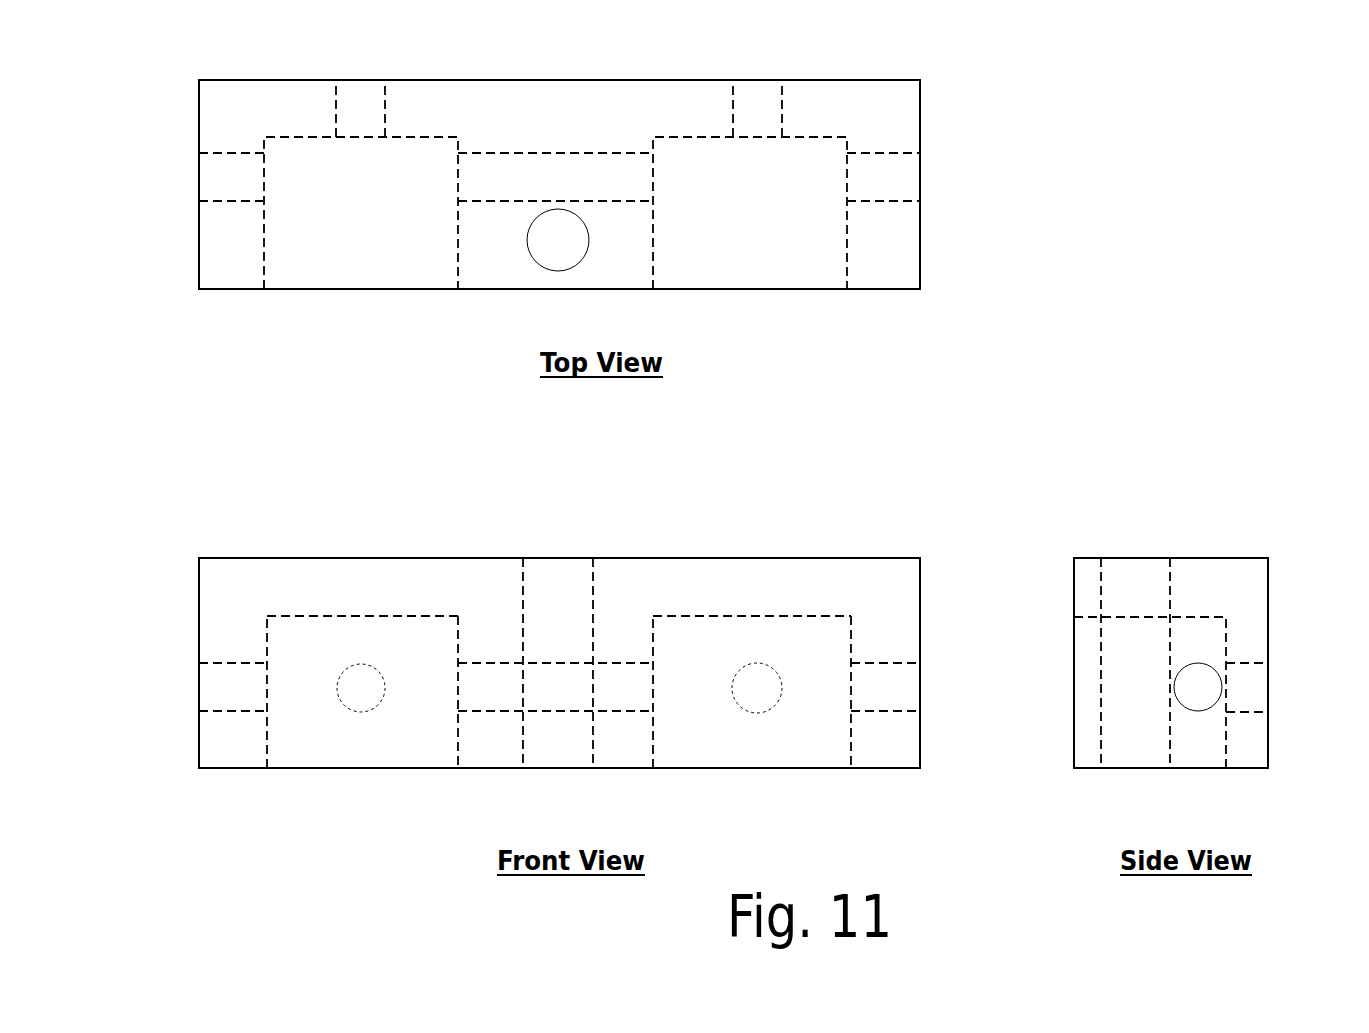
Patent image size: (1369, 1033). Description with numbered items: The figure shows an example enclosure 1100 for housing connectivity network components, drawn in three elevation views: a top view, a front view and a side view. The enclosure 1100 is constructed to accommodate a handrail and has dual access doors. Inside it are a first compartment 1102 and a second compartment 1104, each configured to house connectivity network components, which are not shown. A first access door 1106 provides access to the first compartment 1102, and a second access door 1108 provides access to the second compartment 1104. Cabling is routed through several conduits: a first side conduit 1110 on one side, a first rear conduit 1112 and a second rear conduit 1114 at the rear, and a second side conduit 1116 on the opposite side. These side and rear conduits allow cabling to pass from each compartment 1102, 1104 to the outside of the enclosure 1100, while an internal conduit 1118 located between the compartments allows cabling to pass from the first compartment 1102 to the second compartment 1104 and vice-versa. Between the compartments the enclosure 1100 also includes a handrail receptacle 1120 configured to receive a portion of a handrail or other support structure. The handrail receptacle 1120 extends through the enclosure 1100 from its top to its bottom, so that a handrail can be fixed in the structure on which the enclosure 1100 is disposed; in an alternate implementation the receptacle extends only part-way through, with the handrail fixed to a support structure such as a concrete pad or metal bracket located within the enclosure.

The enclosure 1100 is at (733, 424).
The first compartment 1102 is at (327, 376).
The second compartment 1104 is at (868, 468).
The first access door 1106 is at (355, 710).
The second access door 1108 is at (762, 714).
The first side conduit 1110 is at (200, 432).
The first rear conduit 1112 is at (408, 369).
The second rear conduit 1114 is at (984, 370).
The second side conduit 1116 is at (1072, 482).
The internal conduit 1118 is at (819, 418).
The handrail receptacle 1120 is at (817, 488).